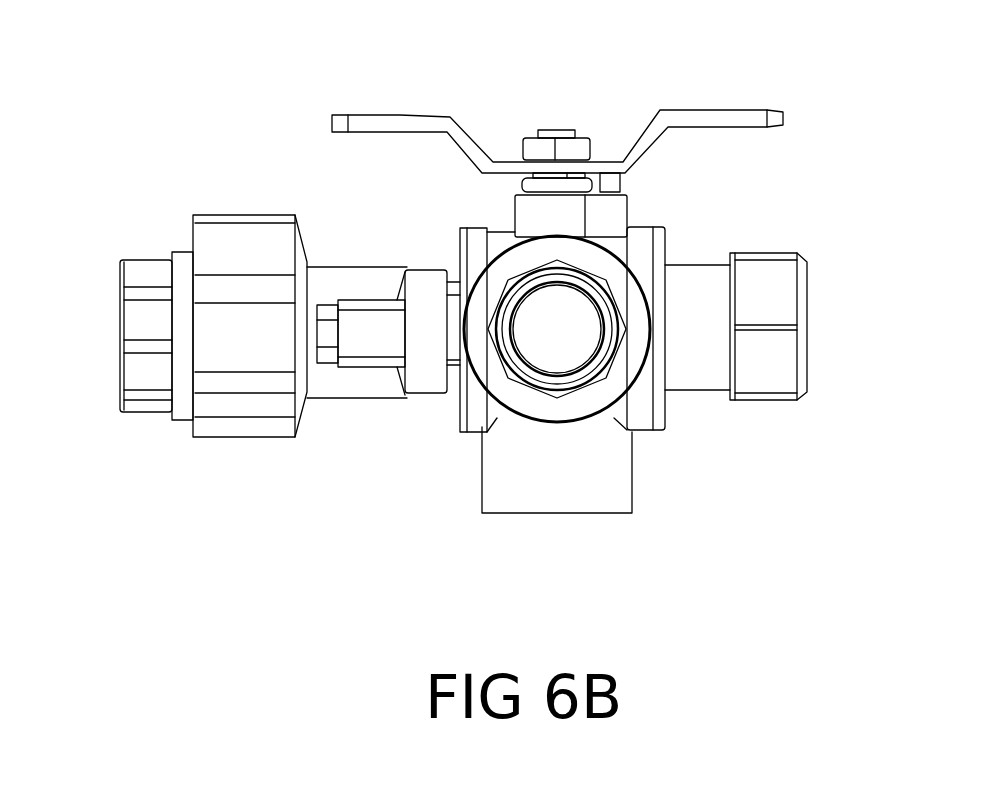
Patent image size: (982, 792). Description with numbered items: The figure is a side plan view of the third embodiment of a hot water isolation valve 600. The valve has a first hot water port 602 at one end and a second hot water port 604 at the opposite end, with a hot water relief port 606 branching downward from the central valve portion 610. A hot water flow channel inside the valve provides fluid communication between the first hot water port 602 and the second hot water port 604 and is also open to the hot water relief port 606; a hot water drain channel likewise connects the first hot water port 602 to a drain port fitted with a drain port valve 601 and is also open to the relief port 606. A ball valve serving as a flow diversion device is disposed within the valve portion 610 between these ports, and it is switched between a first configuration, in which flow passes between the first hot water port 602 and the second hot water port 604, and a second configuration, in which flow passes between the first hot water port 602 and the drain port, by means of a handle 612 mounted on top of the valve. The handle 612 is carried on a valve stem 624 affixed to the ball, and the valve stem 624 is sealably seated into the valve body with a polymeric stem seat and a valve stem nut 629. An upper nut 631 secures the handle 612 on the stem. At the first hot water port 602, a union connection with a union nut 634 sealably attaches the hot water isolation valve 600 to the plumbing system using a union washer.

The hot water isolation valve 600 is at (746, 494).
The drain port valve 601 is at (547, 367).
The first hot water port 602 is at (115, 335).
The second hot water port 604 is at (808, 323).
The hot water relief port 606 is at (557, 513).
The valve portion 610 is at (748, 262).
The handle 612 is at (345, 128).
The valve stem 624 is at (555, 130).
The valve stem nut 629 is at (522, 186).
The stem nut 631 is at (527, 140).
The union nut 634 is at (213, 437).